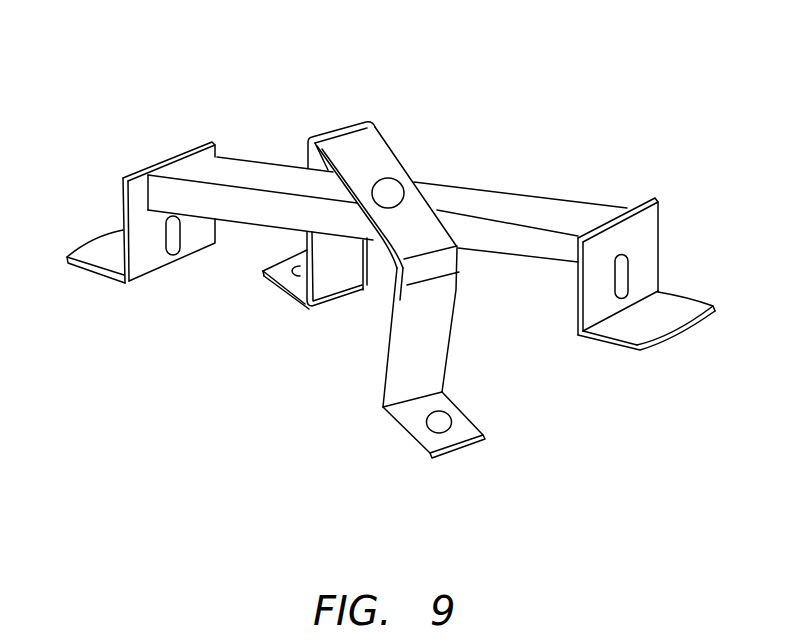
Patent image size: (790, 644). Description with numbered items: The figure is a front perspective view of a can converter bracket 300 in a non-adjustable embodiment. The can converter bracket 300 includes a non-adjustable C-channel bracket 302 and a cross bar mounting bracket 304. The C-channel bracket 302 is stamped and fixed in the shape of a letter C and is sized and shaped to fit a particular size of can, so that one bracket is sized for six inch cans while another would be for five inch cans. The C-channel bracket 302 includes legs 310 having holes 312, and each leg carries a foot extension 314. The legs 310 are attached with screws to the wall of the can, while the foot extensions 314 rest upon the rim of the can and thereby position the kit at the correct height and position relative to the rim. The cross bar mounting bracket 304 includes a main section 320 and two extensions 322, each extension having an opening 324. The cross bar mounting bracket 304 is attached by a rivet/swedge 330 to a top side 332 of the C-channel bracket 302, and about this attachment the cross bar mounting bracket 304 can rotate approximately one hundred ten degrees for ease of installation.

The can converter bracket 300 is at (261, 105).
The C-channel bracket 302 is at (470, 194).
The cross bar mounting bracket 304 is at (362, 150).
The legs 310 is at (142, 190).
The holes 312 is at (170, 252).
The foot extension 314 is at (68, 257).
The main section 320 is at (418, 237).
The extensions 322 is at (338, 273).
The opening 324 is at (427, 450).
The rivet/swedge 330 is at (388, 187).
The top side 332 is at (252, 170).